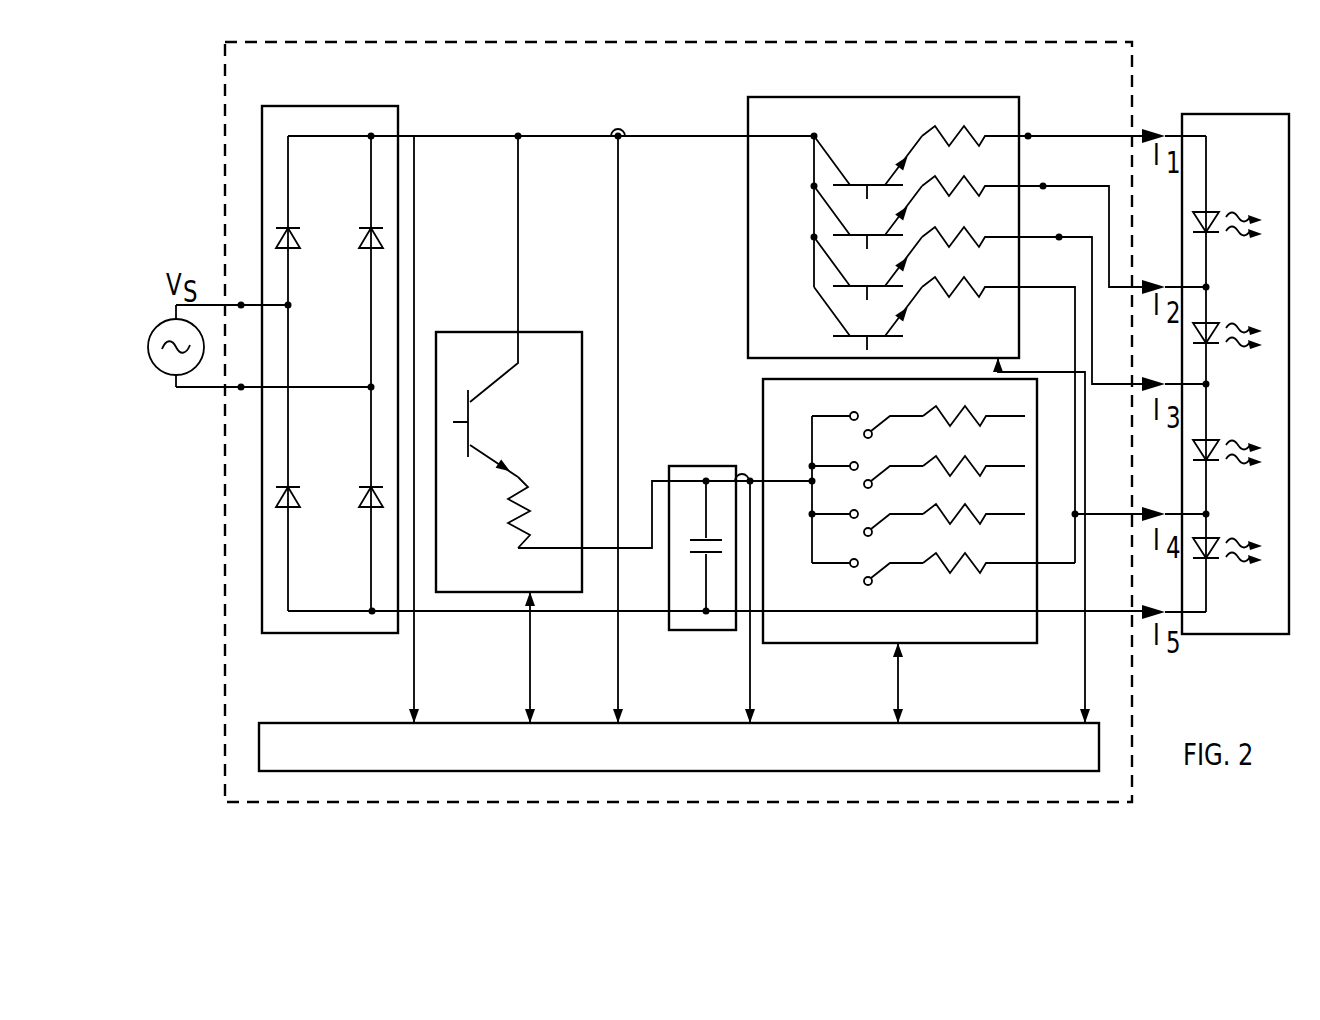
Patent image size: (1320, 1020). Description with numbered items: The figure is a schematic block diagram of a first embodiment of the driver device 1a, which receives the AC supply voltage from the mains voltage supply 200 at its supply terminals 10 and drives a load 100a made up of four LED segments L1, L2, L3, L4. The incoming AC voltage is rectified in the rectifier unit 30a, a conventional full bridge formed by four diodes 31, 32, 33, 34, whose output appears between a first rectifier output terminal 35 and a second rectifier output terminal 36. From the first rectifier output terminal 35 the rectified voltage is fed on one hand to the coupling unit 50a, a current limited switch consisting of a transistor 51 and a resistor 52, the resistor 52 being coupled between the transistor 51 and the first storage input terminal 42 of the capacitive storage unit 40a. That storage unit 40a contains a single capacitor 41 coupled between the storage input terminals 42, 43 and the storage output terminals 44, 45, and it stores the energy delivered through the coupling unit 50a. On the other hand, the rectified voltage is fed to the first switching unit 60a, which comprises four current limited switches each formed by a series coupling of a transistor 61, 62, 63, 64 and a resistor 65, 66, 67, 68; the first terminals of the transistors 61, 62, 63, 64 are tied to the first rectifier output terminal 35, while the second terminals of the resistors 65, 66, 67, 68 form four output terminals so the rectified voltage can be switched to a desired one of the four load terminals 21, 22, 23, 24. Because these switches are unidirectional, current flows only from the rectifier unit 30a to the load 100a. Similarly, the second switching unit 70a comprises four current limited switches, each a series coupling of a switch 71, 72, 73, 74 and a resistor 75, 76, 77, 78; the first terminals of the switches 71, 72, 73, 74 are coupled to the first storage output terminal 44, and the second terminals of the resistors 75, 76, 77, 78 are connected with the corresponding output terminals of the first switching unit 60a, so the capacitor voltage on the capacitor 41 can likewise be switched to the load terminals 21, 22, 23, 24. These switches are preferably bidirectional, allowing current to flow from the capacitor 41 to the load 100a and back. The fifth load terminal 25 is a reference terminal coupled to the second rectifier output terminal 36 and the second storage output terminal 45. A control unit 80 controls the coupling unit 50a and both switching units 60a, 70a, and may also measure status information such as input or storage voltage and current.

The driver device 1a is at (1132, 55).
The supply terminals 10 is at (241, 305).
The mains voltage supply 200 is at (150, 360).
The first load terminal 21 is at (1143, 130).
The second load terminal 22 is at (1145, 282).
The third load terminal 23 is at (1140, 380).
The fourth load terminal 24 is at (1143, 509).
The fifth load terminal 25 is at (1143, 608).
The rectifier unit 30a is at (335, 106).
The diode 31 is at (292, 230).
The diode 32 is at (366, 226).
The diode 33 is at (283, 487).
The diode 34 is at (362, 484).
The first rectifier output terminal 35 is at (371, 136).
The second rectifier output terminal 36 is at (372, 611).
The capacitive storage unit 40a is at (676, 466).
The capacitor 41 is at (700, 538).
The first storage input terminal 42 is at (650, 485).
The second storage input terminal 43 is at (650, 612).
The first storage output terminal 44 is at (746, 470).
The second storage output terminal 45 is at (744, 615).
The coupling unit 50a is at (560, 332).
The transistor 51 is at (490, 392).
The resistor 52 is at (510, 514).
The first switching unit 60a is at (913, 97).
The transistor 61 is at (822, 158).
The transistor 62 is at (822, 210).
The transistor 63 is at (822, 262).
The transistor 64 is at (830, 318).
The resistor 65 is at (970, 132).
The resistor 66 is at (970, 182).
The resistor 67 is at (970, 233).
The resistor 68 is at (970, 284).
The second switching unit 70a is at (763, 386).
The switch 71 is at (874, 430).
The switch 72 is at (876, 479).
The switch 73 is at (876, 527).
The switch 74 is at (876, 576).
The resistor 75 is at (978, 413).
The resistor 76 is at (978, 463).
The resistor 77 is at (978, 511).
The resistor 78 is at (978, 559).
The control unit 80 is at (1003, 723).
The load 100a is at (1238, 114).
The LED segment L1 is at (1215, 210).
The LED segment L2 is at (1215, 321).
The LED segment L3 is at (1215, 438).
The LED segment L4 is at (1215, 536).